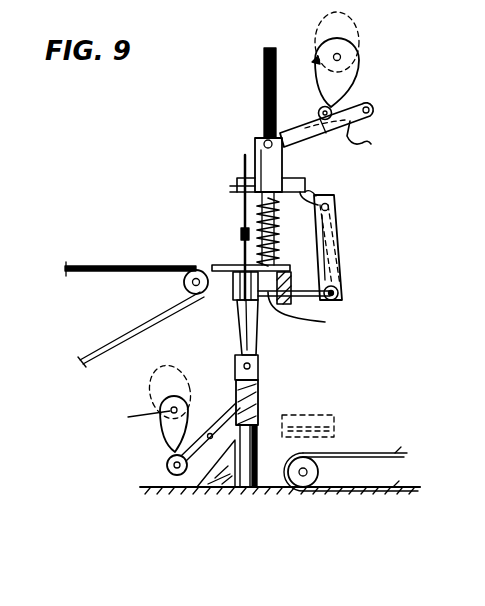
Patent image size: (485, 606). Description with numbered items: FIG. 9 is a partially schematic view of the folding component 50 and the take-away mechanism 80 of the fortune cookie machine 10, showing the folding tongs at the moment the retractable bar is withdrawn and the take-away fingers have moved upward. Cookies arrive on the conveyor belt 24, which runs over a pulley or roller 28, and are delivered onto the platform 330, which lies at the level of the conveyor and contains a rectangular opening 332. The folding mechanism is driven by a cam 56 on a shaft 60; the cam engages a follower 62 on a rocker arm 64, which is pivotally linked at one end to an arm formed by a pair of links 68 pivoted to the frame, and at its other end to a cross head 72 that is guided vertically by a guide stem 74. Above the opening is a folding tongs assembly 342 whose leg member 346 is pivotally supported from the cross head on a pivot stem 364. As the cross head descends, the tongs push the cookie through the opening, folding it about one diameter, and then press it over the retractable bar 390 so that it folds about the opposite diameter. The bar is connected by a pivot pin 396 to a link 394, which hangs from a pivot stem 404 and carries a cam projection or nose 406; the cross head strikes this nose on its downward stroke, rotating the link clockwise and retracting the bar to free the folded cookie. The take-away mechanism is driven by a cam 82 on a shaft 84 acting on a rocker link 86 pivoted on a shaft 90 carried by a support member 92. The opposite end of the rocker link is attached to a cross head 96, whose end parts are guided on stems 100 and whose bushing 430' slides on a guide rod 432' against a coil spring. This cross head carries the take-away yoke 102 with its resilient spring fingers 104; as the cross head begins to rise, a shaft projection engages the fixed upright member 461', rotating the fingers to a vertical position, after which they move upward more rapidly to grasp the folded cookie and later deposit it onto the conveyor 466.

The heald frame / harness 10 is at (223, 103).
The conveyor belt 24 is at (118, 266).
The pulley or roller 28 is at (186, 281).
The folding component 50 is at (402, 191).
The cam 56 is at (358, 61).
The shaft 60 is at (345, 46).
The follower 62 is at (316, 110).
The rocker arm 64 is at (356, 101).
The links 68 is at (373, 137).
The cross head 72 is at (285, 168).
The guide stem 74 is at (263, 114).
The take-away mechanism 80 is at (356, 376).
The cam 82 is at (190, 410).
The shaft 84 is at (152, 402).
The rocker link 86 is at (165, 443).
The shaft 90 is at (210, 426).
The support member 92 is at (195, 488).
The cross head 96 is at (258, 410).
The stems 100 is at (289, 488).
The take-away yoke / take-away fingers 102 is at (257, 338).
The resilient spring fingers 104 is at (240, 300).
The platform 330 is at (300, 270).
The rectangular opening 332 is at (316, 317).
The folding tongs assembly 342 is at (210, 202).
The tongs member 346 is at (243, 208).
The pivot stem 364 is at (238, 178).
The retractable bar 390 is at (340, 276).
The link 394 is at (330, 236).
The pivot pin 396 is at (350, 303).
The pivot stem 404 is at (333, 206).
The cam projection or nose 406 is at (310, 193).
The bushing 430' is at (284, 391).
The guide rod 432' is at (256, 494).
The upright member / fixed abutment 461' is at (187, 524).
The conveyor 466 is at (400, 454).